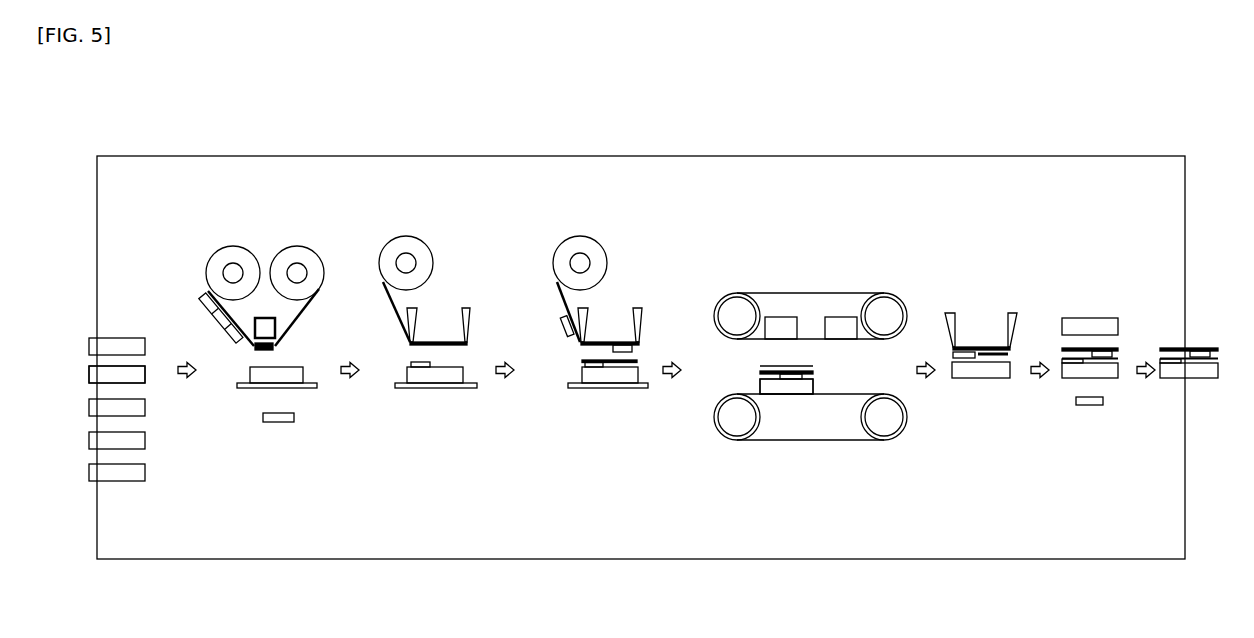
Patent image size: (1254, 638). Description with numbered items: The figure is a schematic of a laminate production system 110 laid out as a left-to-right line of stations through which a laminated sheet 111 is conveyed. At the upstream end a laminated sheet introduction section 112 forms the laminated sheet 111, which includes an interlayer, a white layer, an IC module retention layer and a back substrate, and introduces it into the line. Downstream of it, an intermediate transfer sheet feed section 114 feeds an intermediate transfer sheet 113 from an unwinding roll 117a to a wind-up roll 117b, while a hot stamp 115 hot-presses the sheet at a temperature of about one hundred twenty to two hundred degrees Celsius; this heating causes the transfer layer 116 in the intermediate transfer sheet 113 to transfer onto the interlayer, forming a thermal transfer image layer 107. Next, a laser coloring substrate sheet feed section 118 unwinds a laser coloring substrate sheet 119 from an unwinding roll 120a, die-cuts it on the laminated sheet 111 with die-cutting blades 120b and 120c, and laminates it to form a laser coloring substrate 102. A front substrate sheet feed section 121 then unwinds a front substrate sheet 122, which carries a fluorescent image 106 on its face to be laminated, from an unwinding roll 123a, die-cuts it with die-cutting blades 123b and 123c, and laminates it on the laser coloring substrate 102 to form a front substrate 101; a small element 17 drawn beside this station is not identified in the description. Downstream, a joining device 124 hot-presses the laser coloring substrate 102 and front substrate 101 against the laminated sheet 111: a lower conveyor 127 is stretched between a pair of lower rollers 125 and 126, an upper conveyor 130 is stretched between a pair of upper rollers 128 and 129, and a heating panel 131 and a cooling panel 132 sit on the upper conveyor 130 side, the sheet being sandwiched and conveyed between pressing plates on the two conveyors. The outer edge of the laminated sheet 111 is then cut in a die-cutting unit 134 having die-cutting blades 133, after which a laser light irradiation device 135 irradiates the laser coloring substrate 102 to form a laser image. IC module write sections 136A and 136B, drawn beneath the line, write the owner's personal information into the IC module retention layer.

The laminate production system 110 is at (1043, 130).
The laminated sheet 111 is at (138, 366).
The laminated sheet introduction section 112 is at (143, 339).
The intermediate transfer sheet 113 is at (288, 327).
The intermediate transfer sheet feed section 114 is at (273, 285).
The hot stamp 115 is at (277, 331).
The transfer layer 116 is at (257, 349).
The unwinding roll 117a is at (236, 247).
The wind-up roll 117b is at (300, 247).
The laser coloring substrate sheet feed section 118 is at (449, 288).
The laser coloring substrate sheet 119 is at (393, 303).
The unwinding roll 120a is at (407, 237).
The die-cutting blade 120b is at (417, 310).
The die-cutting blade 120c is at (470, 310).
The front substrate sheet feed section 121 is at (617, 288).
The front substrate sheet 122 is at (618, 344).
The unwinding roll 123a is at (580, 237).
The die-cutting blade 123b is at (589, 310).
The die-cutting blade 123c is at (642, 310).
The heater 17 is at (559, 292).
The front substrate 101 is at (760, 366).
The laser coloring substrate 102 is at (638, 360).
The fluorescent image 106 is at (592, 365).
The thermal transfer image layer 107 is at (432, 363).
The joining device 124 is at (829, 353).
The lower roller 125 is at (737, 439).
The lower roller 126 is at (884, 439).
The lower conveyor 127 is at (810, 441).
The upper roller 128 is at (736, 295).
The upper roller 129 is at (884, 295).
The upper conveyor 130 is at (805, 292).
The heating panel 131 is at (775, 317).
The cooling panel 132 is at (836, 317).
The die-cutting blades 133 is at (1012, 313).
The die-cutting unit 134 is at (998, 293).
The laser light irradiation device 135 is at (1080, 318).
The IC module write section 136A is at (280, 423).
The IC module write section 136B is at (1090, 406).